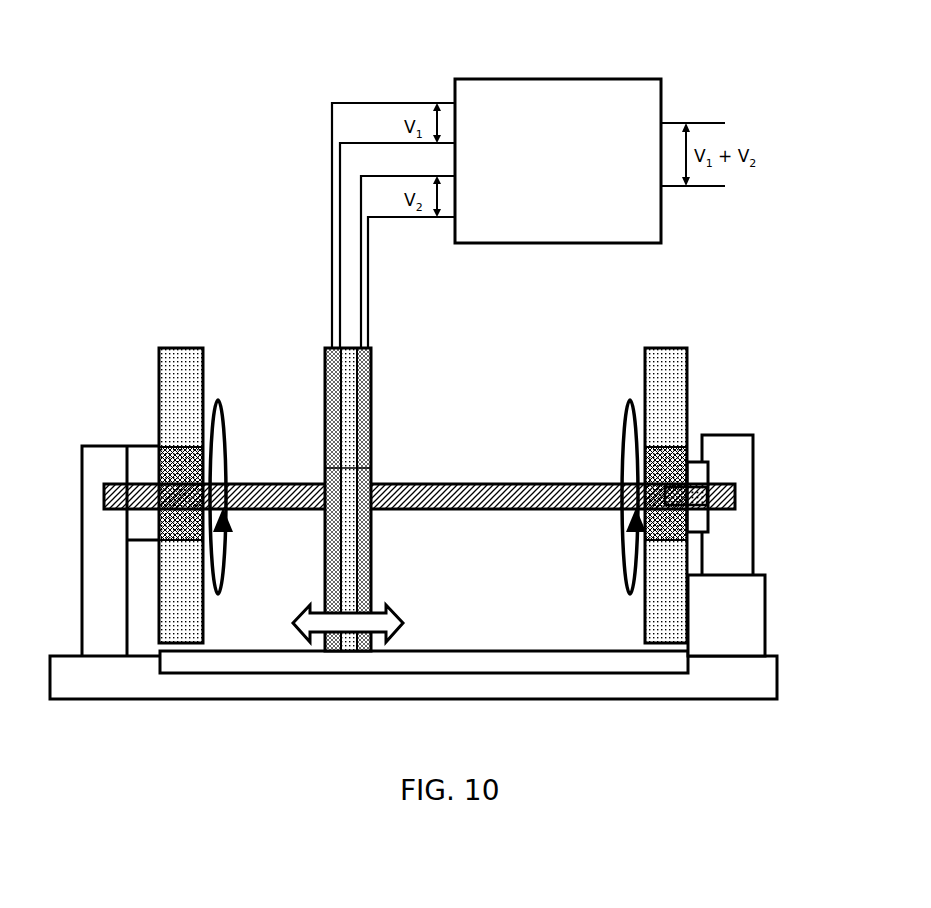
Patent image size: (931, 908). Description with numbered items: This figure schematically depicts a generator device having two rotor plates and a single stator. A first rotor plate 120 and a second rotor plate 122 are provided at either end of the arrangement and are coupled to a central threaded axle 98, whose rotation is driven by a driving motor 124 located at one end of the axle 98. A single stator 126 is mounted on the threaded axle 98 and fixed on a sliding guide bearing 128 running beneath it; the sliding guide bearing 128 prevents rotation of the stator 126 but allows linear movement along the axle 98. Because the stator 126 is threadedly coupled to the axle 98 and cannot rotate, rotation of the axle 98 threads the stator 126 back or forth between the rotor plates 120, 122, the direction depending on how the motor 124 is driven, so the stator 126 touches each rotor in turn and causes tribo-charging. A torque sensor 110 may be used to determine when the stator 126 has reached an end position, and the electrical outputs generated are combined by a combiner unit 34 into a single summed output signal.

The combiner unit 34 is at (577, 77).
The threaded axle 98 is at (470, 483).
The torque sensor 110 is at (693, 497).
The first rotor plate 120 is at (203, 358).
The second rotor plate 122 is at (687, 375).
The driving motor 124 is at (753, 465).
The stator 126 is at (376, 419).
The sliding guide bearing 128 is at (455, 651).